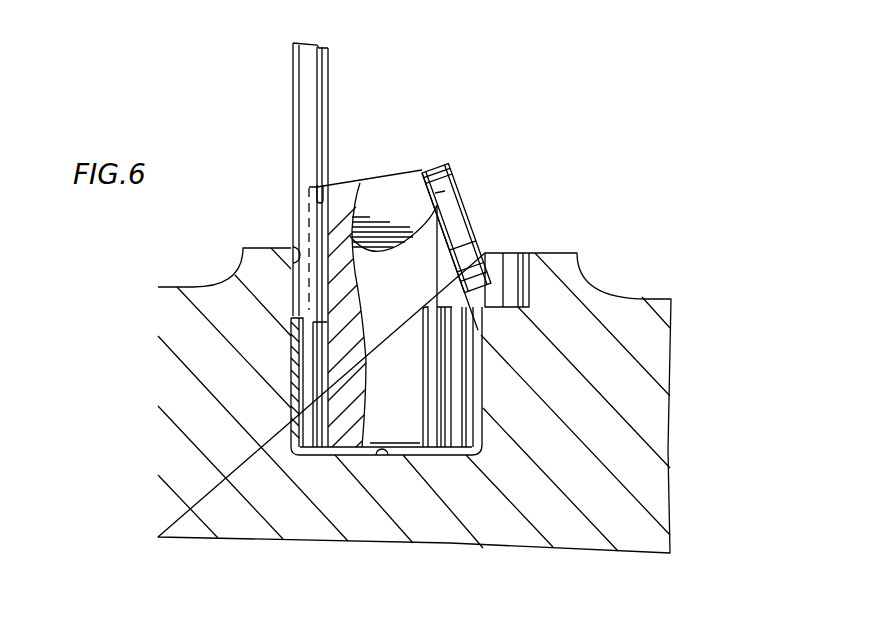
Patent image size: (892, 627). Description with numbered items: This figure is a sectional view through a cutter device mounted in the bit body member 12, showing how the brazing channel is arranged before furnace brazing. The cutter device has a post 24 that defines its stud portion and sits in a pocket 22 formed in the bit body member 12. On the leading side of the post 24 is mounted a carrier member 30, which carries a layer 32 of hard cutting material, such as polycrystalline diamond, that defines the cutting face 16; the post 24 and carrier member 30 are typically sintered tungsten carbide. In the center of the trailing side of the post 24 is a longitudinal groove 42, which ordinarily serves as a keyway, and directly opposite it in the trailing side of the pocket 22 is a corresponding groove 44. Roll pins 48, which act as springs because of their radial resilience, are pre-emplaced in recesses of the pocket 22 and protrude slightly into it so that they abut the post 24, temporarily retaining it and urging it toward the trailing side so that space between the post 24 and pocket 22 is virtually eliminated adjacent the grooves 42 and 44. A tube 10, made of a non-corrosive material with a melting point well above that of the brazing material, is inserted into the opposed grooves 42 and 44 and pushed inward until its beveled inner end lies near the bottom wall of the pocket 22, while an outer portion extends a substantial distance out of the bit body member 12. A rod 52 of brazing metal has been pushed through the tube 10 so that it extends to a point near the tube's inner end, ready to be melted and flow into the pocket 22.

The tube 10 is at (297, 67).
The bit body member 12 is at (653, 330).
The cutting face 16 is at (465, 202).
The pocket 22 is at (385, 456).
The post 24 is at (403, 182).
The carrier member 30 is at (443, 185).
The layer of hard cutting material 32 is at (475, 230).
The longitudinal groove 42 is at (323, 177).
The groove 44 is at (293, 242).
The roll pins 48 is at (433, 398).
The rod 52 is at (306, 357).